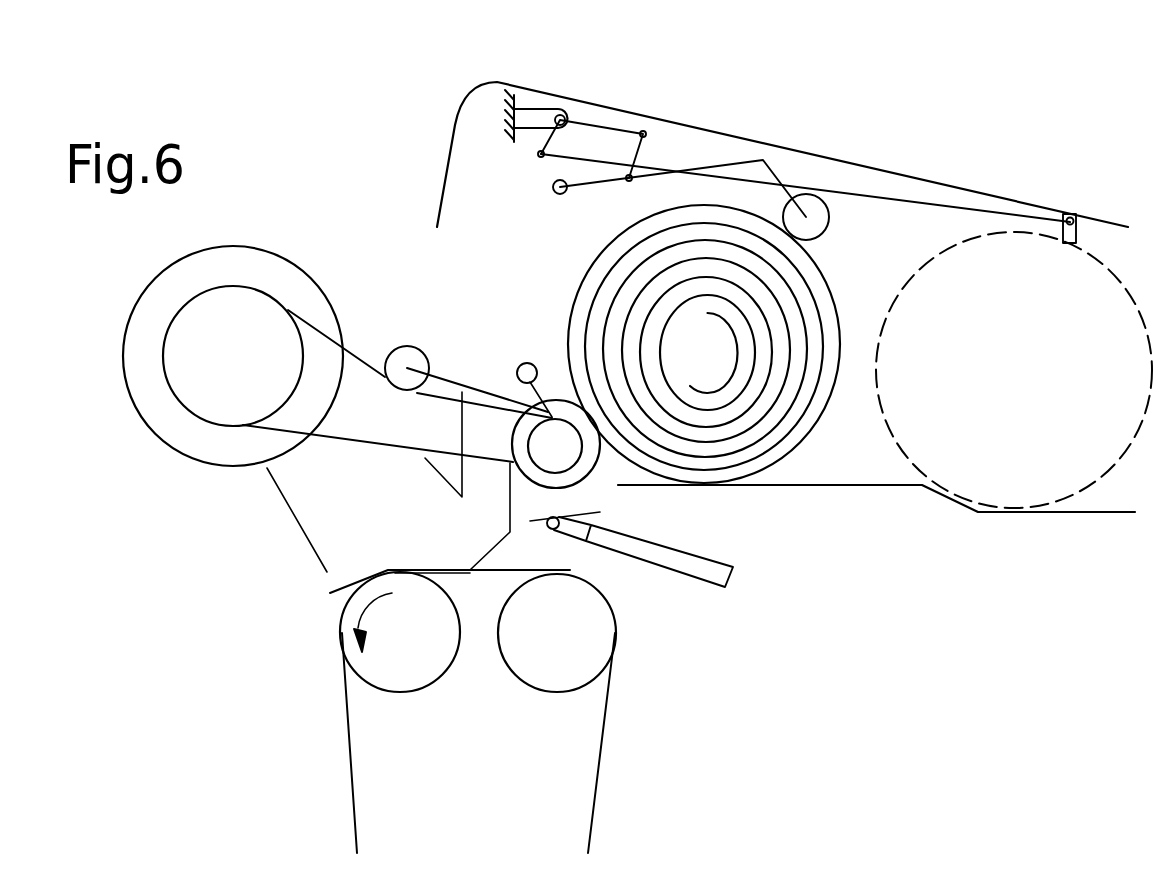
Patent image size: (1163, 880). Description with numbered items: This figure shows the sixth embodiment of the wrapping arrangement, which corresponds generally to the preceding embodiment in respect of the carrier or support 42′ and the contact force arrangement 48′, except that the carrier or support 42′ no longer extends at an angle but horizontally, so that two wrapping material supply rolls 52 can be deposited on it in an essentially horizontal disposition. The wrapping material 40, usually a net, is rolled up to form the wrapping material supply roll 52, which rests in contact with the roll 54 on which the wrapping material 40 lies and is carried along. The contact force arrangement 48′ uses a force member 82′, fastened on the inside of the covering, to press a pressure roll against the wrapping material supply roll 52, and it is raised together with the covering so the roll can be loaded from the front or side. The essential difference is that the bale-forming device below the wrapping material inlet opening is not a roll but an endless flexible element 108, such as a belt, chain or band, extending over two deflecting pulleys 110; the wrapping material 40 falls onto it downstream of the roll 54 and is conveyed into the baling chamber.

The wrapping material 40 is at (410, 572).
The carrier or support 42′ is at (1050, 512).
The contact force arrangement 48′ is at (810, 178).
The wrapping material supply roll 52 is at (728, 373).
The roll 54 is at (577, 512).
The force member 82′ is at (888, 202).
The endless flexible element 108 is at (600, 768).
The deflecting pulleys 110 is at (548, 653).